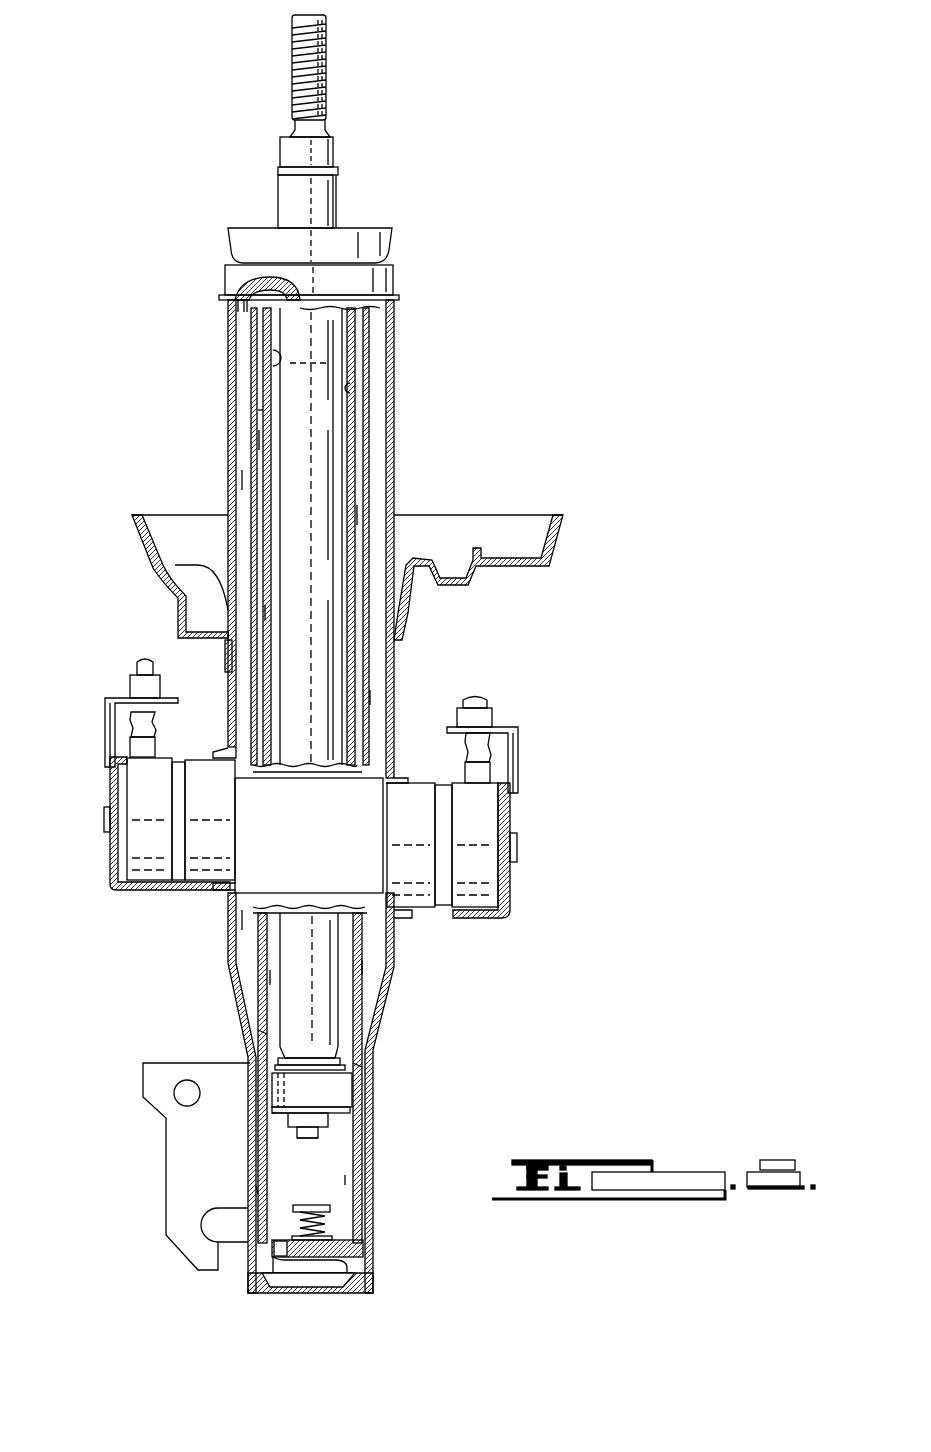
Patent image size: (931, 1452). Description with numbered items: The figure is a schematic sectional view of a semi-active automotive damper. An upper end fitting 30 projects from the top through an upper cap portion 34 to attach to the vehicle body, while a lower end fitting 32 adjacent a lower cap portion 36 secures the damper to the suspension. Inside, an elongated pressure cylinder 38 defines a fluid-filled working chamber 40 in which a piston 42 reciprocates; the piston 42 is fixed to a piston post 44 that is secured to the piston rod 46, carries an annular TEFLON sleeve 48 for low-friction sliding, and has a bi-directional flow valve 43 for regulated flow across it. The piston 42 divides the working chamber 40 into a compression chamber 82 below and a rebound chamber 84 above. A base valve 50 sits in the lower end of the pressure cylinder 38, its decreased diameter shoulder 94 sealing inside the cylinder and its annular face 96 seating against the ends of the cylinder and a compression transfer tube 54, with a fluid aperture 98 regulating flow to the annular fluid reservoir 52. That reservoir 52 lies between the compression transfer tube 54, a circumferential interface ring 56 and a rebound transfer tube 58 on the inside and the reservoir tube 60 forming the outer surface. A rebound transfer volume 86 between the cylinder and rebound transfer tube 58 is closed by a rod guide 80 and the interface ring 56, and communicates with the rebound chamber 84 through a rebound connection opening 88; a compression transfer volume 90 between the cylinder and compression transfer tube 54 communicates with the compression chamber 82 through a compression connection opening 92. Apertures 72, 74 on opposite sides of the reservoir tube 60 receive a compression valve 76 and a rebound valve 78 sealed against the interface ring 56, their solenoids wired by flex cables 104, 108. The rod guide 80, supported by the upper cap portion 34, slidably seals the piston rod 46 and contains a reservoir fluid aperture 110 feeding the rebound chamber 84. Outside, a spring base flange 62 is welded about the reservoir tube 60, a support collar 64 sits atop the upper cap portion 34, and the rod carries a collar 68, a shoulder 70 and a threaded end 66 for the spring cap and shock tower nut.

The upper end fitting 30 is at (246, 77).
The lower end fitting 32 is at (171, 1171).
The upper cap portion 34 is at (395, 282).
The lower cap portion 36 is at (357, 1293).
The pressure cylinder 38 is at (350, 388).
The working chamber 40 is at (348, 427).
The piston 42 is at (345, 1122).
The bi-directional flow valve 43 is at (277, 1116).
The piston post 44 is at (297, 1135).
The piston rod 46 is at (290, 193).
The annular TEFLON sleeve 48 is at (335, 1092).
The base valve 50 is at (297, 1273).
The annular fluid reservoir 52 is at (245, 480).
The compression transfer tube 54 is at (367, 968).
The circumferential interface ring 56 is at (381, 778).
The rebound transfer tube 58 is at (374, 697).
The reservoir tube 60 is at (394, 352).
The spring base flange 62 is at (545, 562).
The support collar 64 is at (392, 247).
The threaded end 66 is at (300, 30).
The collar 68 is at (285, 148).
The shoulder 70 is at (290, 175).
The aperture 72 is at (201, 880).
The aperture 74 is at (420, 914).
The compression valve 76 is at (124, 846).
The rebound valve 78 is at (505, 874).
The rod guide 80 is at (285, 365).
The compression chamber 82 is at (331, 1180).
The rebound chamber 84 is at (272, 612).
The rebound transfer volume 86 is at (266, 440).
The rebound connection opening 88 is at (263, 413).
The compression transfer volume 90 is at (263, 1032).
The compression connection opening 92 is at (258, 1190).
The decreased diameter shoulder 94 is at (247, 1245).
The annular face 96 is at (363, 1240).
The fluid aperture 98 is at (283, 1238).
The flex cable 104 is at (143, 664).
The flex cable 108 is at (483, 703).
The reservoir fluid aperture 110 is at (249, 300).